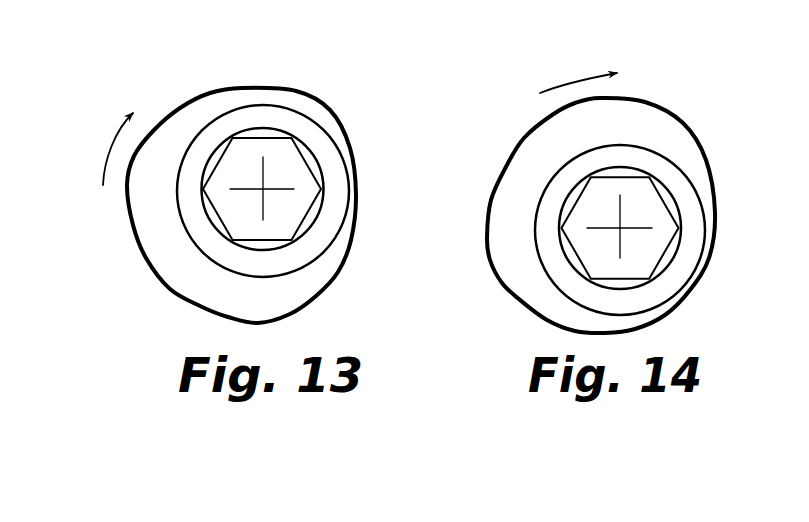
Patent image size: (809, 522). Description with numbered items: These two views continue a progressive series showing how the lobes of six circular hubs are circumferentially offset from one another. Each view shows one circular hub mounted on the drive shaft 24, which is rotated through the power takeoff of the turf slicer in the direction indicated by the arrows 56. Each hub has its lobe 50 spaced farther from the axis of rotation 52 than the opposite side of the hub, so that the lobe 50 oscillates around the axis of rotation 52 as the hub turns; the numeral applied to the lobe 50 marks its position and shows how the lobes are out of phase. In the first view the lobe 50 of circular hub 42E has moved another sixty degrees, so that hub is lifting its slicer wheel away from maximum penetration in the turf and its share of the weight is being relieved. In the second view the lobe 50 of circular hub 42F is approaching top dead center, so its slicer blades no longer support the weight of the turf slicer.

In FIG. 13, the drive shaft 24 is at (235, 212).
In FIG. 14, the drive shaft 24 is at (597, 253).
In FIG. 13, the circular hub 42E is at (240, 84).
In FIG. 14, the circular hub 42F is at (517, 141).
In FIG. 13, the lobe 50 is at (150, 260).
In FIG. 14, the lobe 50 is at (503, 163).
In FIG. 13, the axis of rotation 52 is at (267, 185).
In FIG. 14, the axis of rotation 52 is at (628, 237).
In FIG. 13, the arrows 56 is at (108, 148).
In FIG. 14, the arrows 56 is at (567, 85).